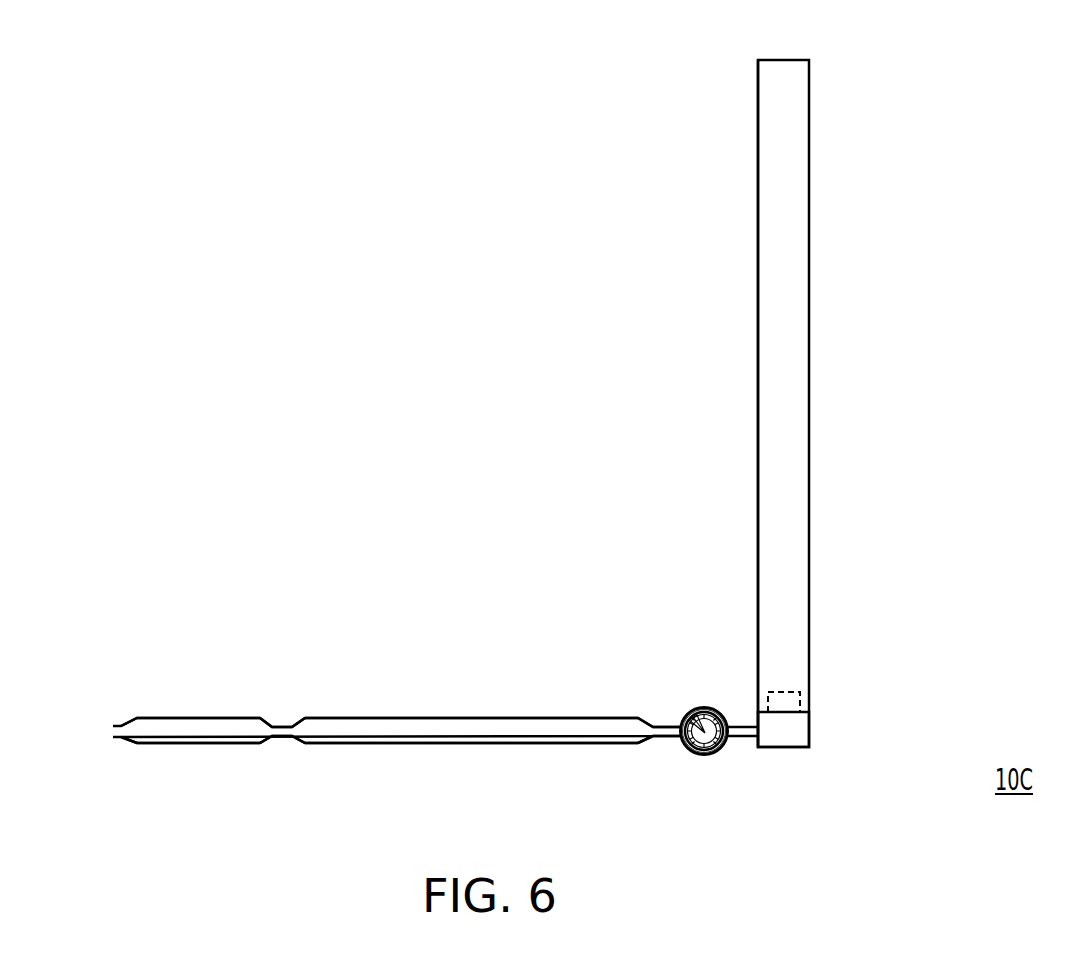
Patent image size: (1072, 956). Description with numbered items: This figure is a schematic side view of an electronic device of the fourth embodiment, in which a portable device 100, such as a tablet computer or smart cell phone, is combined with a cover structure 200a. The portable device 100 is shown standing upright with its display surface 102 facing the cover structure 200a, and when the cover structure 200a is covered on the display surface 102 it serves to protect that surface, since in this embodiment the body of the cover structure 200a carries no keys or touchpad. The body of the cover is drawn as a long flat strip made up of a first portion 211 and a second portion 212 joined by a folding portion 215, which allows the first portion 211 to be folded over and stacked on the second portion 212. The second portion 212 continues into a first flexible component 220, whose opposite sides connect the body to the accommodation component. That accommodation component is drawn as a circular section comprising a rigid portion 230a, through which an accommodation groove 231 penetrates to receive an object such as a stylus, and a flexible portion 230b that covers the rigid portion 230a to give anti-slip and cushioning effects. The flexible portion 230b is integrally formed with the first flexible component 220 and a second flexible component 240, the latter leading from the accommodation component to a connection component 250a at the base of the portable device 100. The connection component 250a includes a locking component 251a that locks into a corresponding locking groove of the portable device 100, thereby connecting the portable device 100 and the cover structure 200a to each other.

The portable device 100 is at (797, 459).
The display surface 102 is at (756, 269).
The cover structure 200a is at (386, 773).
The first portion 211 is at (187, 733).
The second portion 212 is at (489, 733).
The folding portion 215 is at (282, 728).
The first flexible component 220 is at (660, 740).
The rigid portion 230a is at (700, 754).
The flexible portion 230b is at (706, 707).
The accommodation groove 231 is at (686, 714).
The second flexible component 240 is at (748, 740).
The connection component 250a is at (800, 735).
The locking component 251a is at (814, 700).